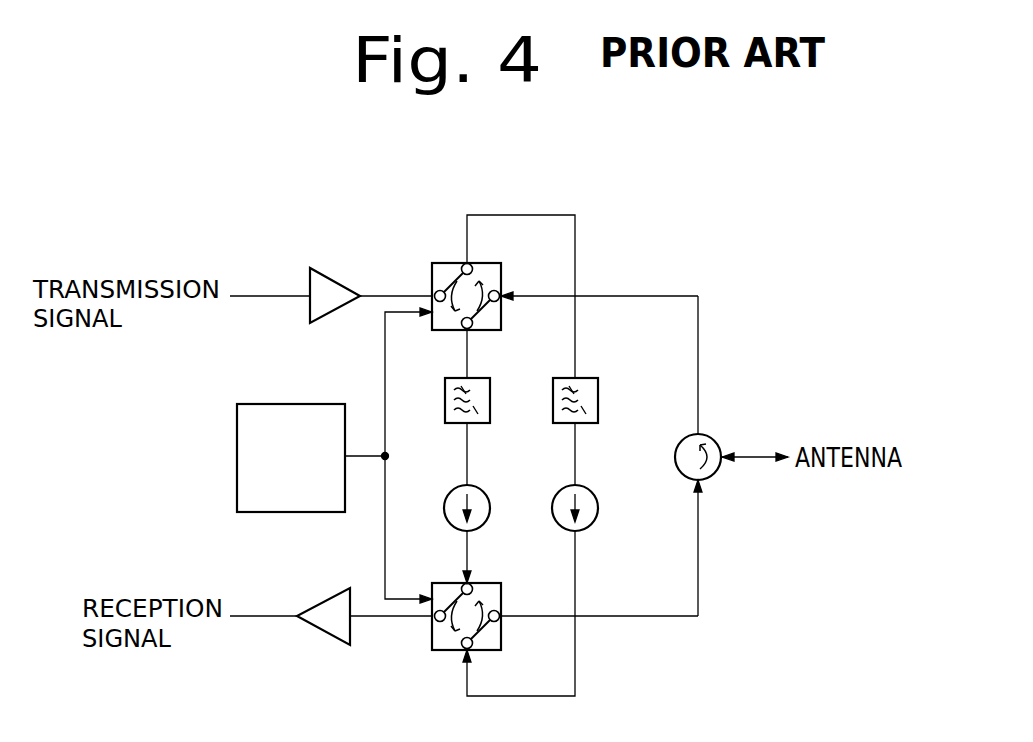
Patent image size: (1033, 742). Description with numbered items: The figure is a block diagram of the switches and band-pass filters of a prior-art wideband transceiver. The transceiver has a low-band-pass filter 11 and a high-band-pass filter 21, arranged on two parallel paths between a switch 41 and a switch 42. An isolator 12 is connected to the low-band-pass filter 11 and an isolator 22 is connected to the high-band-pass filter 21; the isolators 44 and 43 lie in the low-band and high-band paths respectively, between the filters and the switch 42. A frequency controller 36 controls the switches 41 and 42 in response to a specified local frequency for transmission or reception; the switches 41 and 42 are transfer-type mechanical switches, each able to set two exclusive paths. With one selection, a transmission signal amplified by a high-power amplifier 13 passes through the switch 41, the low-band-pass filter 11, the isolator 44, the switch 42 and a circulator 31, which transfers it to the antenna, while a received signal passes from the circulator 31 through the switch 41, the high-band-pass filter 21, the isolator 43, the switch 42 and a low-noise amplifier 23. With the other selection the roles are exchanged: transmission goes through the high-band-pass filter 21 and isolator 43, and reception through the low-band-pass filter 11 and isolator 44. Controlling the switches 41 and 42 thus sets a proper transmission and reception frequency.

The high-power amplifier 13 is at (343, 275).
The switch 41 is at (490, 262).
The high-band-pass filter 21 is at (486, 378).
The low-band-pass filter 11 is at (596, 378).
The frequency controller 36 is at (323, 404).
The circulator 31 is at (706, 433).
The isolator 22 is at (480, 492).
The isolator 12 is at (588, 492).
The isolator 43 is at (501, 533).
The isolator 44 is at (616, 590).
The low-noise amplifier 23 is at (319, 598).
The switch 42 is at (492, 583).